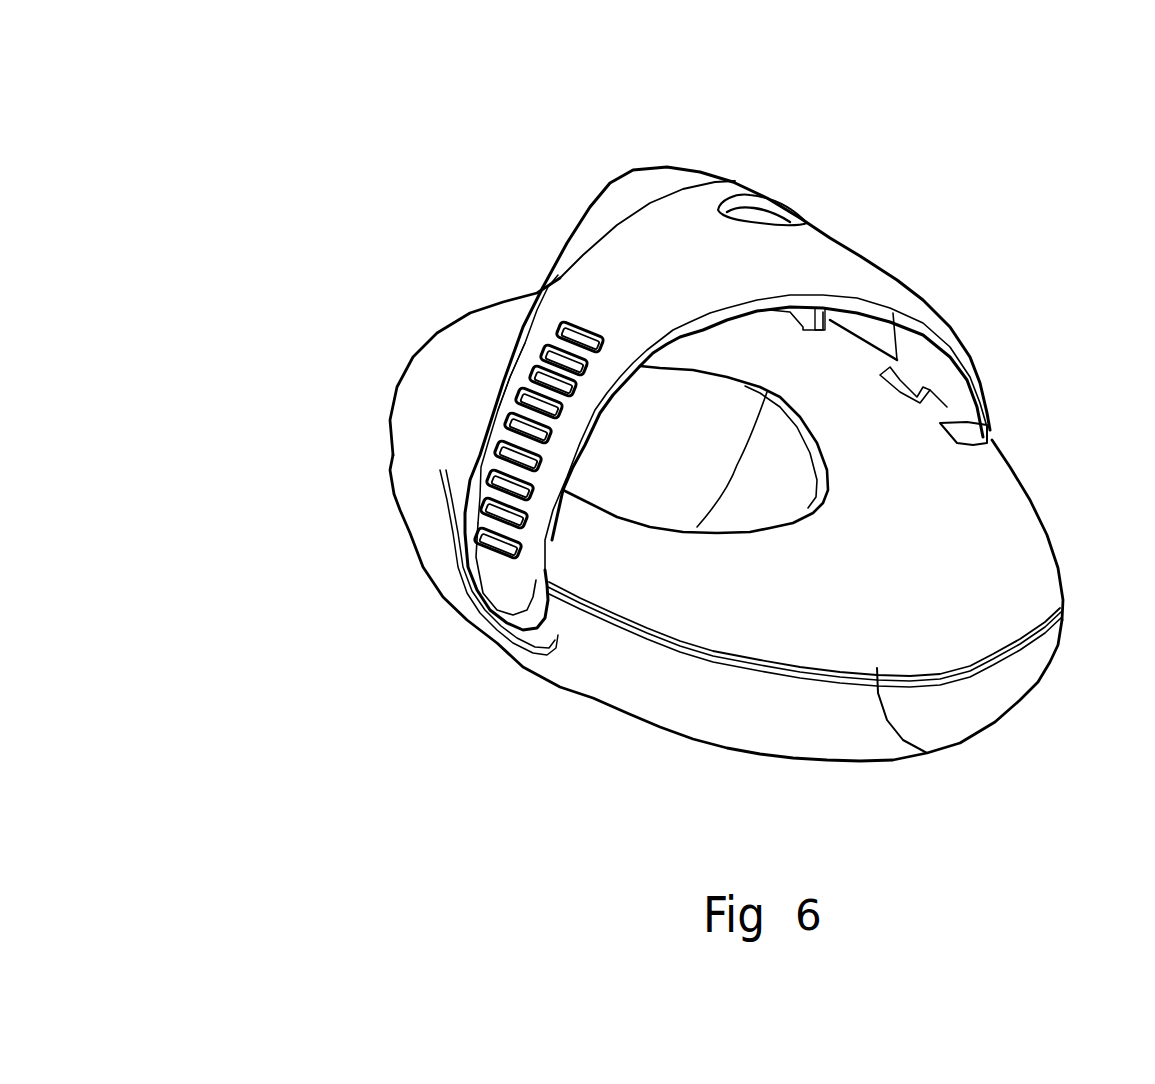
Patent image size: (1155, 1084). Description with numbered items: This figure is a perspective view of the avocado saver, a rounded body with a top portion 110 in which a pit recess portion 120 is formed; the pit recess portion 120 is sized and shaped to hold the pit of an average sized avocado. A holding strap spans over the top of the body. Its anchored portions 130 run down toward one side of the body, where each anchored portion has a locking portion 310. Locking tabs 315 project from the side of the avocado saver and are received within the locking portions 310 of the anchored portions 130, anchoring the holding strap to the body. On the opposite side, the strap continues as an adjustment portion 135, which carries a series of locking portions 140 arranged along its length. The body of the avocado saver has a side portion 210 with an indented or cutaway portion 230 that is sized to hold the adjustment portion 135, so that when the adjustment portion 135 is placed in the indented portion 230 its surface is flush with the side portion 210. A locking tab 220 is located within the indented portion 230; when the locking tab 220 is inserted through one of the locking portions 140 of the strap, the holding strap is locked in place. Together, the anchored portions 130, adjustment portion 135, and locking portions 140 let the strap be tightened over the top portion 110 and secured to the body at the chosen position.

The top portion 110 is at (1000, 517).
The pit recess portion 120 is at (670, 470).
The anchored portions of the holding strap 130 is at (698, 200).
The adjustment portion of the holding strap 135 is at (514, 373).
The locking portions of the holding strap 140 is at (490, 473).
The side portion 210 is at (957, 714).
The locking tab 220 is at (475, 562).
The indented or cutaway portion 230 is at (527, 623).
The locking portion of the anchored portions 310 is at (987, 425).
The locking tabs 315 is at (937, 408).